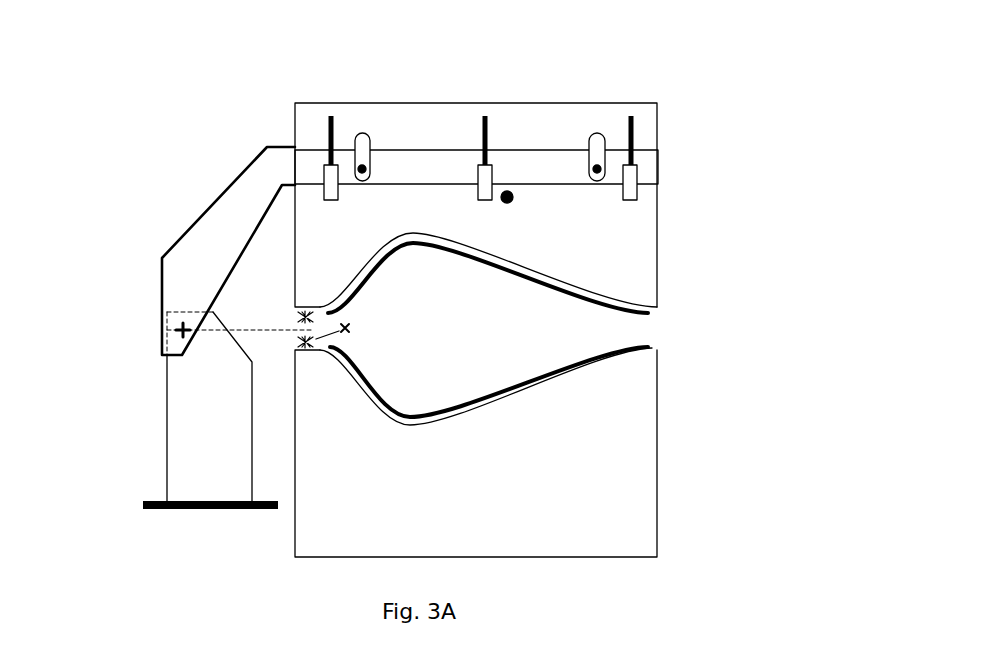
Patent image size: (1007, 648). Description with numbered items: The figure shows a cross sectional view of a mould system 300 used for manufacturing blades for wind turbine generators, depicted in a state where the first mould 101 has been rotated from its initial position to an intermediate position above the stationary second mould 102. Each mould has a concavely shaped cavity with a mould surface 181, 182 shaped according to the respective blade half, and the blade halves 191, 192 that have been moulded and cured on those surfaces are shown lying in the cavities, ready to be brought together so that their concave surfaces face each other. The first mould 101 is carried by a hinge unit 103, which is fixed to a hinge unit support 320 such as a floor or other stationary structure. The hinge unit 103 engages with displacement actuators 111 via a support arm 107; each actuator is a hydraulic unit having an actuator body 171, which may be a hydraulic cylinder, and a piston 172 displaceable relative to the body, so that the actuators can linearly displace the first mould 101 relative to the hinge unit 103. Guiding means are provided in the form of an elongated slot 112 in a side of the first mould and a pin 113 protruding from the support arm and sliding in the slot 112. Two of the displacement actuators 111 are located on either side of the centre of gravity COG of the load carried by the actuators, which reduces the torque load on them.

The mould system 300 is at (98, 68).
The hinge unit 103 is at (173, 213).
The hinge unit support 320 is at (175, 523).
The first mould 101 is at (660, 290).
The second mould 102 is at (662, 533).
The support arm 107 is at (660, 162).
The piston 172 is at (633, 123).
The displacement actuator 111 is at (514, 214).
The actuator body 171 is at (628, 195).
The pin 113 is at (362, 148).
The elongated slot 112 is at (362, 175).
The centre of gravity COG is at (512, 202).
The mould surface 181 is at (588, 293).
The blade half 191 is at (423, 252).
The mould surface 182 is at (615, 362).
The blade half 192 is at (500, 380).